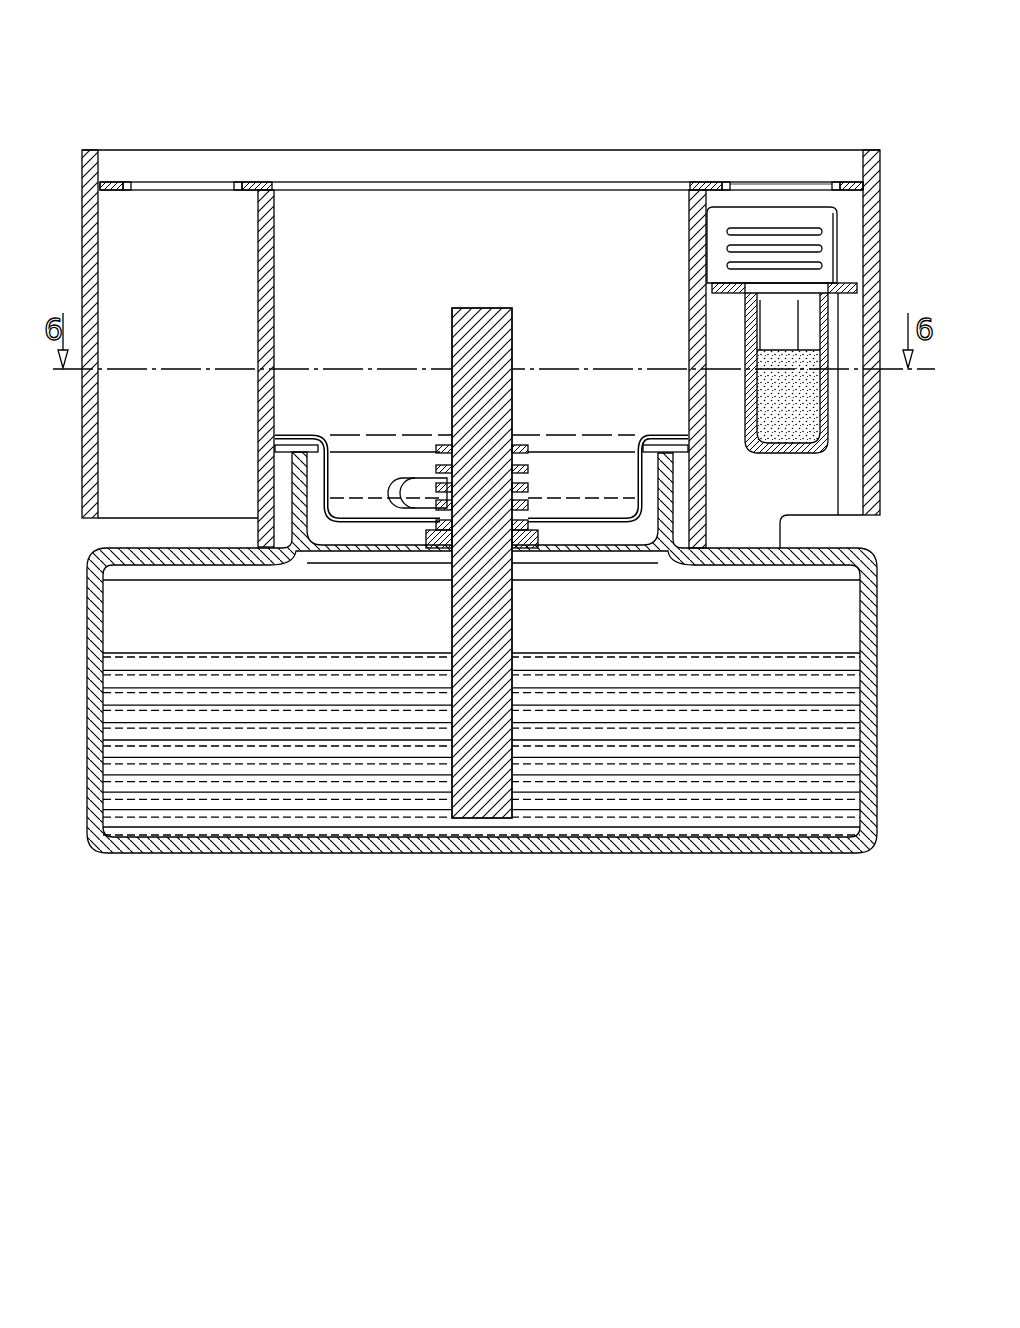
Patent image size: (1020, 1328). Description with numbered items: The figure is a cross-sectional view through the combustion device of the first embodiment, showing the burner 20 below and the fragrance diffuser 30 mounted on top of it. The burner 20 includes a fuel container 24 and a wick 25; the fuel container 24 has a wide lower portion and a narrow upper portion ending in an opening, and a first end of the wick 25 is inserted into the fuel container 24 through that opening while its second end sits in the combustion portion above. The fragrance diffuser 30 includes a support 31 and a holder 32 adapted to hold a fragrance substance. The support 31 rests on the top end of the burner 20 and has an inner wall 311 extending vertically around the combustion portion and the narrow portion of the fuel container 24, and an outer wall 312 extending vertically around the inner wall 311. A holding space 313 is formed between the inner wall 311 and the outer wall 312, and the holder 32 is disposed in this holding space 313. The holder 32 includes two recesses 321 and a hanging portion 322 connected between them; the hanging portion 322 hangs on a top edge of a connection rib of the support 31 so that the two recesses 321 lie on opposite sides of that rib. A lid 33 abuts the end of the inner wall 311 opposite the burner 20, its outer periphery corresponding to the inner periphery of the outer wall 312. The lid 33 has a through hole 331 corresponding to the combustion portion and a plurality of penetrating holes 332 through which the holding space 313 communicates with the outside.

The burner 20 is at (892, 640).
The fuel container 24 is at (895, 722).
The wick 25 is at (478, 798).
The fragrance diffuser 30 is at (345, 95).
The support 31 is at (895, 283).
The inner wall 311 is at (705, 503).
The outer wall 312 is at (870, 452).
The holding space 313 is at (177, 222).
The holder 32 is at (850, 205).
The recess 321 is at (823, 392).
The hanging portion 322 is at (760, 214).
The lid 33 is at (704, 186).
The through hole 331 is at (492, 185).
The penetrating hole 332 is at (811, 185).